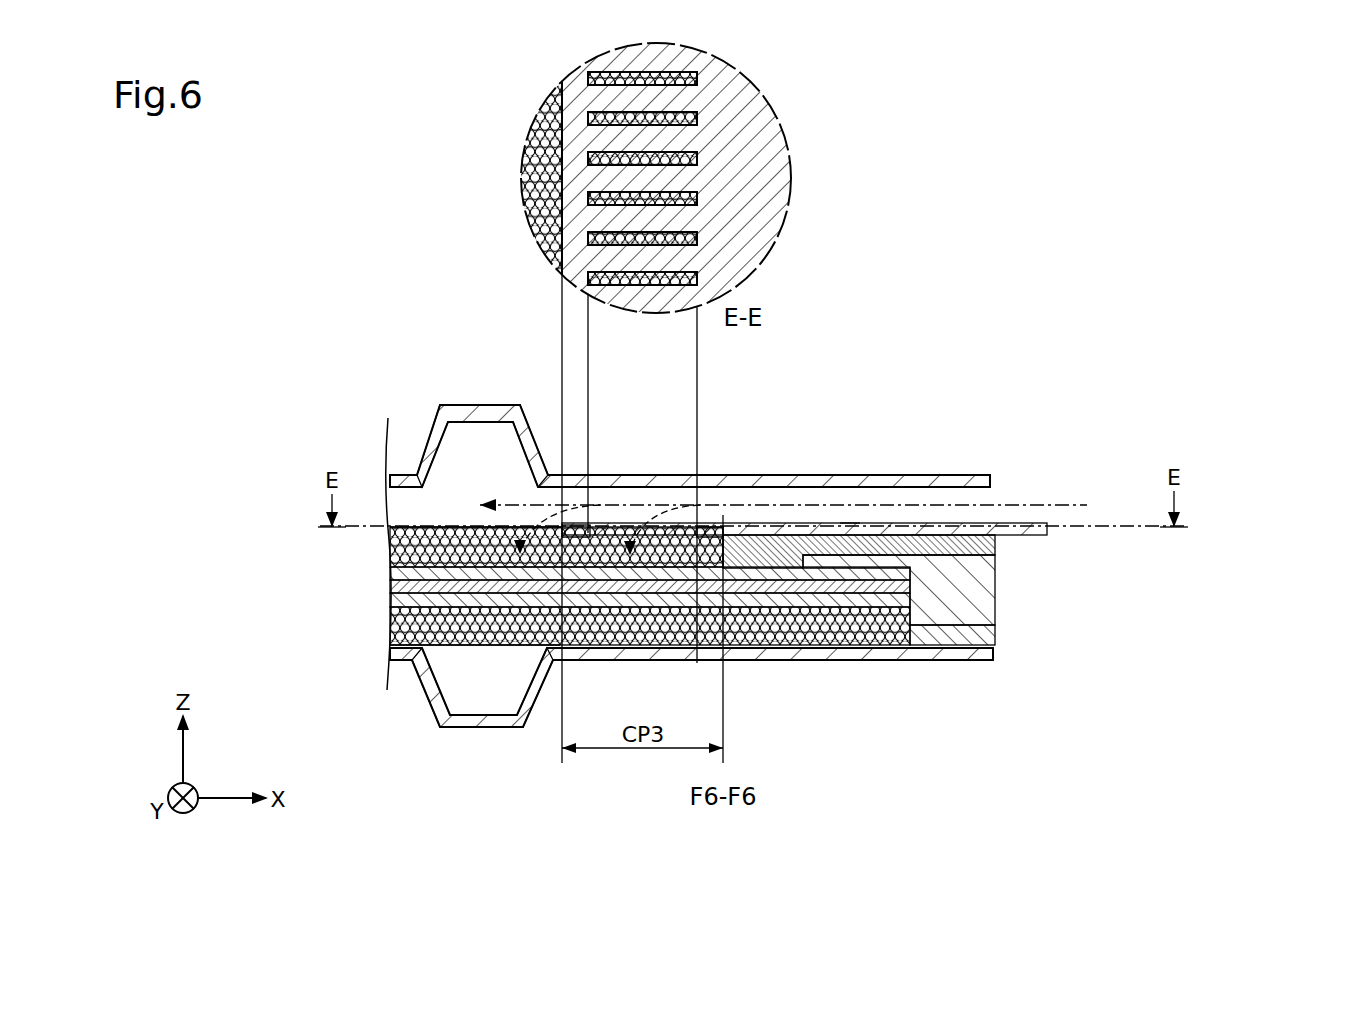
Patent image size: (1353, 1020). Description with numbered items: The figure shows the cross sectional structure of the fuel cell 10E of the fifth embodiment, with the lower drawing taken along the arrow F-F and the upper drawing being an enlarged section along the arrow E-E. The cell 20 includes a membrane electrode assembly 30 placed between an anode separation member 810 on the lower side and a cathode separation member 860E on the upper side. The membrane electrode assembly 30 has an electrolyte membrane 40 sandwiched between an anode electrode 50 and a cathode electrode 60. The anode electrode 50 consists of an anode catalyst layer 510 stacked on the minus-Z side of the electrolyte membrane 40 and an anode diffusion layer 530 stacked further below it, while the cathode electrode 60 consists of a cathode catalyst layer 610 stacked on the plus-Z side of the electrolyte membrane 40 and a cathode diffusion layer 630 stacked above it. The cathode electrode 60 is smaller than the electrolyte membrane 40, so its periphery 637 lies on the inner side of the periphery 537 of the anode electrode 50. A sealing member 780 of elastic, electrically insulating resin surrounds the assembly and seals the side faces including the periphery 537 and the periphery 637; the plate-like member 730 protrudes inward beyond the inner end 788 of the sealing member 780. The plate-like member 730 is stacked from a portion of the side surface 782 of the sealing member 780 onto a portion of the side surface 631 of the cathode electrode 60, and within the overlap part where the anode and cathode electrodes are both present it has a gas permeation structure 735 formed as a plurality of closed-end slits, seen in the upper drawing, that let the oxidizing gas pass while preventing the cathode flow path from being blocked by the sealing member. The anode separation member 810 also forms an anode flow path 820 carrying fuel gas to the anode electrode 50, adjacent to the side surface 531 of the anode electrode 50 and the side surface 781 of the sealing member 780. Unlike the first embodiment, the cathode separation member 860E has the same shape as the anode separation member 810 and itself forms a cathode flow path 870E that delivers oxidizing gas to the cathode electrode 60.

The fuel cell 10E is at (1222, 354).
The cell 20 is at (1206, 432).
The membrane electrode assembly 30 is at (230, 648).
The electrolyte membrane 40 is at (392, 588).
The anode electrode 50 is at (287, 642).
The cathode electrode 60 is at (287, 575).
The anode catalyst layer 510 is at (392, 600).
The anode diffusion layer 530 is at (392, 628).
The −Z-axis direction side surface of the anode electrode 531 is at (487, 650).
The periphery of the anode electrode 537 is at (958, 623).
The cathode catalyst layer 610 is at (392, 573).
The cathode diffusion layer 630 is at (545, 185).
The −Z-axis direction side surface of the cathode electrode 631 is at (462, 527).
The periphery of the cathode electrode 637 is at (955, 556).
The plate-like member 730 is at (738, 195).
The gas permeation structure 735 is at (697, 278).
The sealing member 780 is at (972, 602).
The −Z-axis direction side surface of the sealing member 781 is at (926, 660).
The −Z-axis direction side surface of the sealing member 782 is at (850, 521).
The inner end of the sealing member 788 is at (700, 537).
The anode separation member 810 is at (953, 661).
The anode flow path 820 is at (517, 687).
The cathode separation member 860E is at (938, 472).
The cathode flow path 870E is at (520, 443).